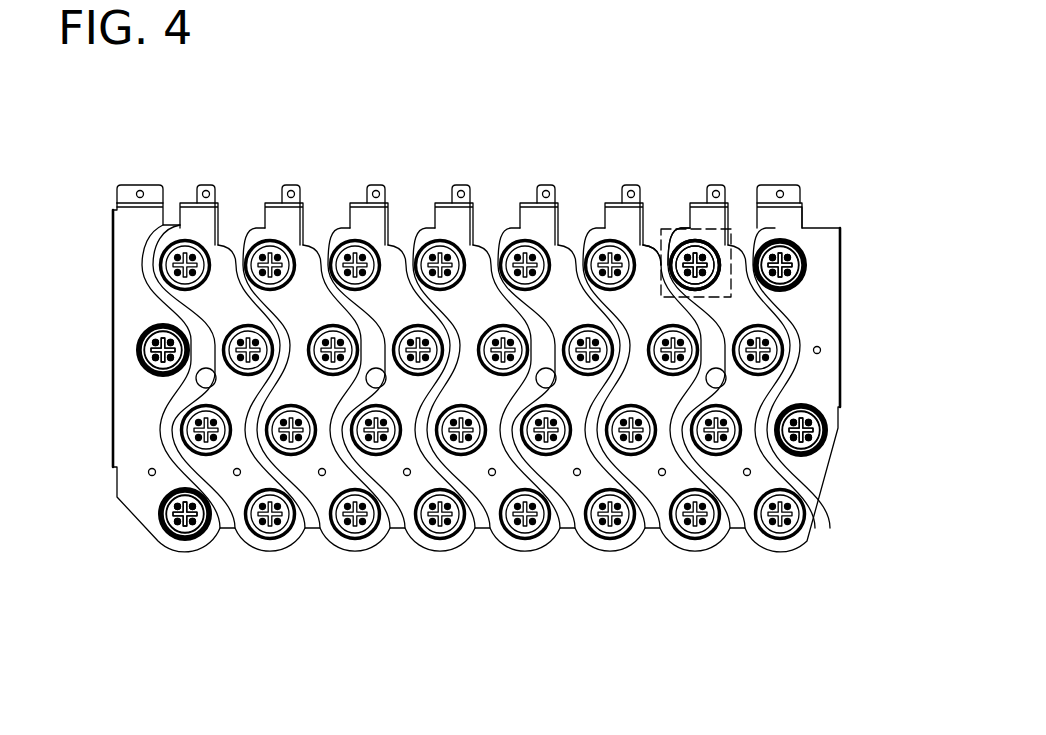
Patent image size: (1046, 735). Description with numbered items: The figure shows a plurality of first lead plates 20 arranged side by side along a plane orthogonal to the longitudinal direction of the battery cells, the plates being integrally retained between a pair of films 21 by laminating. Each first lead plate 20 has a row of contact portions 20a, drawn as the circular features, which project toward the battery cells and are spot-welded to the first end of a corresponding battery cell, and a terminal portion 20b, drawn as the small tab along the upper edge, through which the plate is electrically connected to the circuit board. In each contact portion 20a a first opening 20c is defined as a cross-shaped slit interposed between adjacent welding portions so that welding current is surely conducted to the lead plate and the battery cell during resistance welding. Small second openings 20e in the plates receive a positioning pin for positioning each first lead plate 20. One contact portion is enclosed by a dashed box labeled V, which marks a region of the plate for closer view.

The first lead plate 20 is at (832, 377).
The contact portion 20a is at (728, 252).
The terminal portion 20b is at (716, 192).
The first opening 20c is at (712, 262).
The second opening 20e is at (750, 472).
The film 21 is at (313, 254).
The region V is at (663, 229).